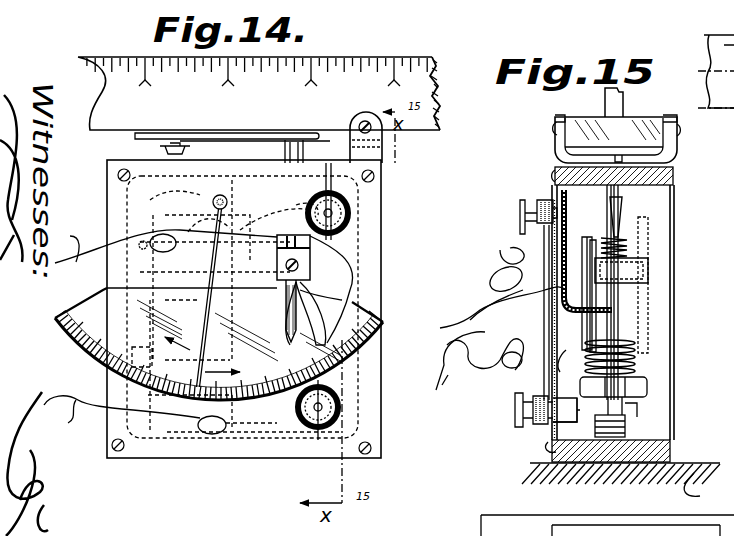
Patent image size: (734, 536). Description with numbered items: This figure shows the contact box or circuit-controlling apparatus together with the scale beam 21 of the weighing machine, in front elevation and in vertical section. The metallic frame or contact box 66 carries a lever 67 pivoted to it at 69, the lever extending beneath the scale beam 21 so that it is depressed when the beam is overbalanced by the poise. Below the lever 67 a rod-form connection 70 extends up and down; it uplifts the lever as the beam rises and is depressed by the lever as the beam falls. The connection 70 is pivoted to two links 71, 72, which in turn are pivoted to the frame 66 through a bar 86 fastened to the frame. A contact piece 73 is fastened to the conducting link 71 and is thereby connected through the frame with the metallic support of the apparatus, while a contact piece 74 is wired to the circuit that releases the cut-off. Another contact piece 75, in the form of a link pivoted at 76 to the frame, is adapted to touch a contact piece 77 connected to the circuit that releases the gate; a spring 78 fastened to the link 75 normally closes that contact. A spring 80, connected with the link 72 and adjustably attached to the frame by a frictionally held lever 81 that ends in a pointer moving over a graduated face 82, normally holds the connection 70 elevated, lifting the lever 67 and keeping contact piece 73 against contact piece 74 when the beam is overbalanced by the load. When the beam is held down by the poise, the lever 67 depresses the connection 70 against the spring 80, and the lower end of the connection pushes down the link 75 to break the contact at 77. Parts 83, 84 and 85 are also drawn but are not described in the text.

In FIG. 14, the scale beam 21 is at (120, 55).
In FIG. 15, the scale beam 21 is at (625, 105).
In FIG. 14, the contact box 66 is at (152, 222).
In FIG. 14, the lever 67 is at (320, 134).
In FIG. 15, the lever 67 is at (617, 139).
In FIG. 14, the pivot 69 is at (369, 131).
In FIG. 15, the pivot 69 is at (680, 136).
In FIG. 14, the connection 70 is at (278, 243).
In FIG. 15, the connection 70 is at (610, 327).
In FIG. 14, the link 71 is at (188, 230).
In FIG. 15, the link 71 is at (621, 270).
In FIG. 14, the link 72 is at (105, 343).
In FIG. 15, the link 72 is at (648, 388).
In FIG. 14, the contact piece 73 is at (224, 343).
In FIG. 15, the contact piece 73 is at (562, 316).
In FIG. 14, the contact piece 74 is at (335, 296).
In FIG. 15, the contact piece 74 is at (490, 292).
In FIG. 14, the contact piece 75 is at (282, 438).
In FIG. 15, the contact piece 75 is at (630, 430).
In FIG. 15, the pivot 76 is at (590, 428).
In FIG. 15, the contact piece 77 is at (590, 328).
In FIG. 15, the spring 78 is at (635, 352).
In FIG. 15, the spring 80 is at (626, 238).
In FIG. 14, the lever 81 is at (290, 226).
In FIG. 15, the lever 81 is at (568, 372).
In FIG. 14, the graduated face 82 is at (96, 360).
In FIG. 15, the adjusting knob 83 is at (515, 412).
In FIG. 15, the adjusting knob 84 is at (520, 212).
In FIG. 15, the screw 85 is at (550, 446).
In FIG. 14, the bar 86 is at (107, 285).